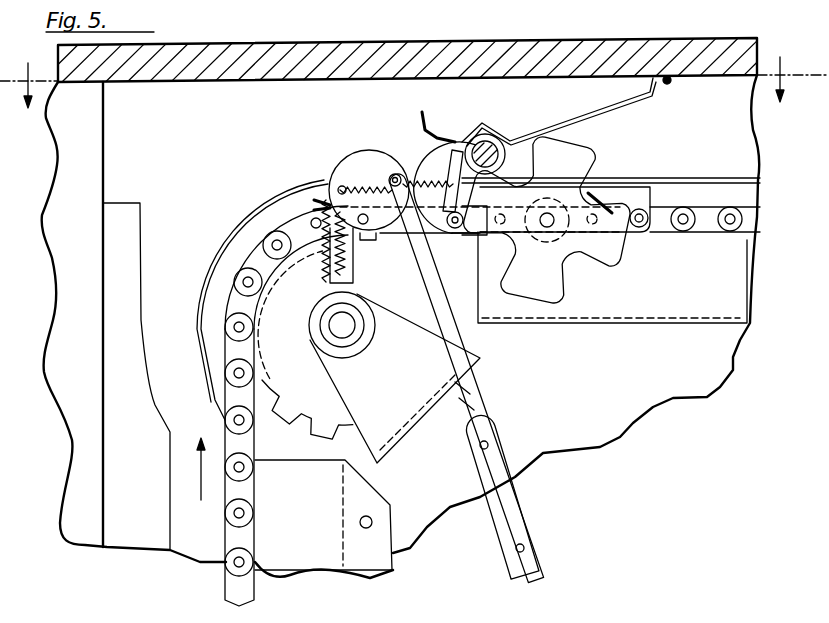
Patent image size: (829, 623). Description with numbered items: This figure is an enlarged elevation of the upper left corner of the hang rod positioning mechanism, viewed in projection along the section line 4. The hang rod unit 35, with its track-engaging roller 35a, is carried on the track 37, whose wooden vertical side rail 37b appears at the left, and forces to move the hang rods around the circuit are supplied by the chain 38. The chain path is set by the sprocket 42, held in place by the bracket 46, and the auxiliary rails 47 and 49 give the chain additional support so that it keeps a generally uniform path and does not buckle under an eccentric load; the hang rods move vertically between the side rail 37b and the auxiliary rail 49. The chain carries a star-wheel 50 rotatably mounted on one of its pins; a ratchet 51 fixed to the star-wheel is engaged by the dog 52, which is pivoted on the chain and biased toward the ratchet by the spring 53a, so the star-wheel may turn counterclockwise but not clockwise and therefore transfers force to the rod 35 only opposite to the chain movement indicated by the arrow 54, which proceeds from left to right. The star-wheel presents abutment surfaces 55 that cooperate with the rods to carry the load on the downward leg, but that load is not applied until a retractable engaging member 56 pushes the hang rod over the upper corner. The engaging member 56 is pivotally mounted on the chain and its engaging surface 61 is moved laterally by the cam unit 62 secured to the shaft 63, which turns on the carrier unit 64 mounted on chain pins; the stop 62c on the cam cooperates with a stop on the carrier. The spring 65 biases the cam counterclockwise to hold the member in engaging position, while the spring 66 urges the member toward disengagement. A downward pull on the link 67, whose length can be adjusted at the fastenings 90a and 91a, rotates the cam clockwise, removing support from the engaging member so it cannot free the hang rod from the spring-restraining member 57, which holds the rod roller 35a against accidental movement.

The section line 4 is at (414, 98).
The hang rod unit 35 is at (486, 150).
The track-engaging roller 35a is at (471, 140).
The track 37 is at (687, 176).
The wooden vertical side rail 37b is at (151, 376).
The chain 38 is at (684, 231).
The sprocket 42 is at (312, 381).
The bracket 46 is at (402, 381).
The auxiliary rail 47 is at (742, 311).
The auxiliary rail 49 is at (302, 541).
The star-wheel 50 is at (578, 158).
The ratchet 51 is at (552, 232).
The dog 52 is at (610, 192).
The spring 53a is at (617, 206).
The arrow 54 is at (200, 479).
The abutment surface 55 is at (478, 148).
The retractable engaging member 56 is at (418, 155).
The spring-restraining member 57 is at (573, 100).
The engaging surface 61 is at (457, 154).
The cam unit 62 is at (352, 152).
The stop 62c is at (364, 244).
The shaft 63 is at (337, 188).
The carrier unit 64 is at (353, 268).
The spring 65 is at (323, 214).
The spring 66 is at (377, 182).
The link 67 is at (476, 386).
The fastening 90a is at (489, 445).
The fastening 91a is at (525, 548).